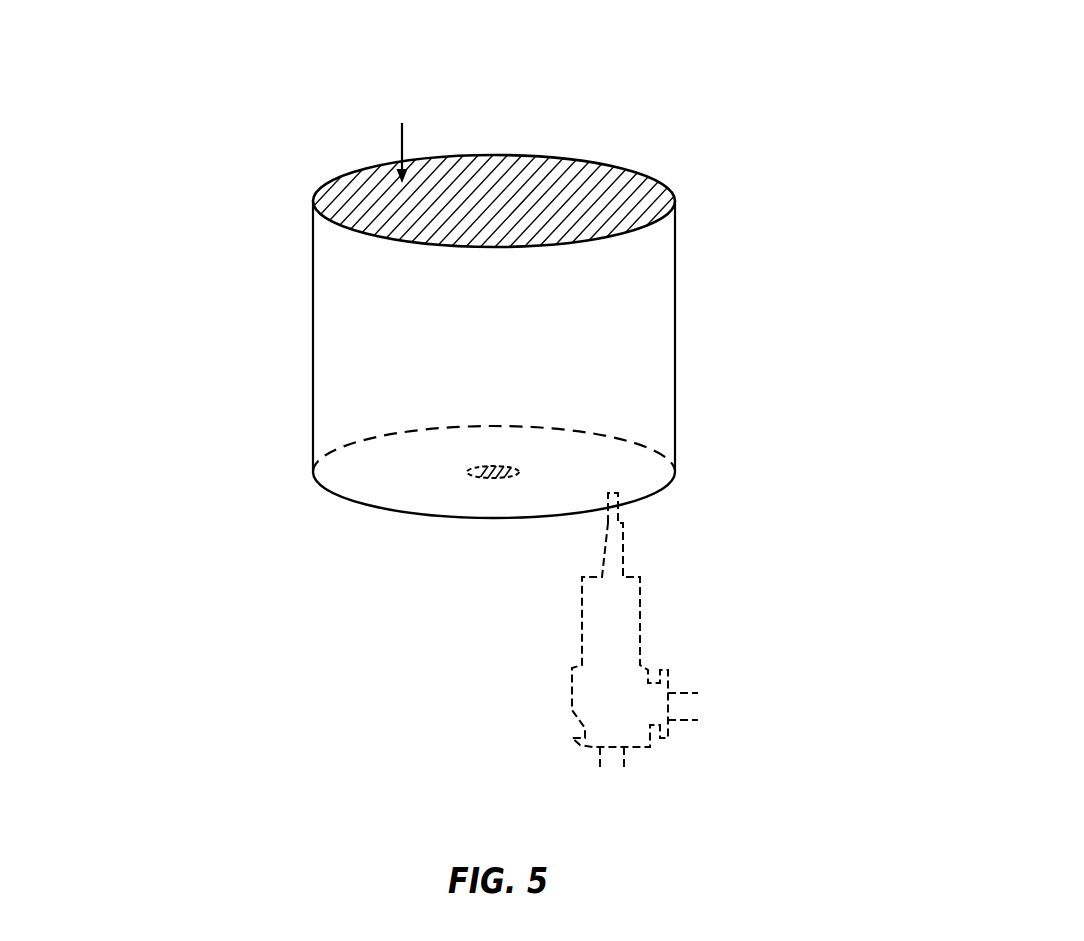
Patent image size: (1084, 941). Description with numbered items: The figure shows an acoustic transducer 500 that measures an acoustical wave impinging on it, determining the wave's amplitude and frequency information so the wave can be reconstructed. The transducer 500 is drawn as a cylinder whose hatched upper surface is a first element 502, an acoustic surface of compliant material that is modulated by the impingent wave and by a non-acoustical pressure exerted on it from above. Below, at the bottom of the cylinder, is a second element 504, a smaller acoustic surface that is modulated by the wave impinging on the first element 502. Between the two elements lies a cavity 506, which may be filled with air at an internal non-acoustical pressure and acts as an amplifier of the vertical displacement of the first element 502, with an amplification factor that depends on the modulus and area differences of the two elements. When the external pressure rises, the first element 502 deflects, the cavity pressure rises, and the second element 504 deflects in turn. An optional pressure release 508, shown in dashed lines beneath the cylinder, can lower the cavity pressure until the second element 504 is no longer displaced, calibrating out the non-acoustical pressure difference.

The acoustic transducer 500 is at (283, 72).
The first element 502 is at (495, 200).
The second element 504 is at (495, 465).
The cavity 506 is at (608, 330).
The pressure release 508 is at (638, 578).